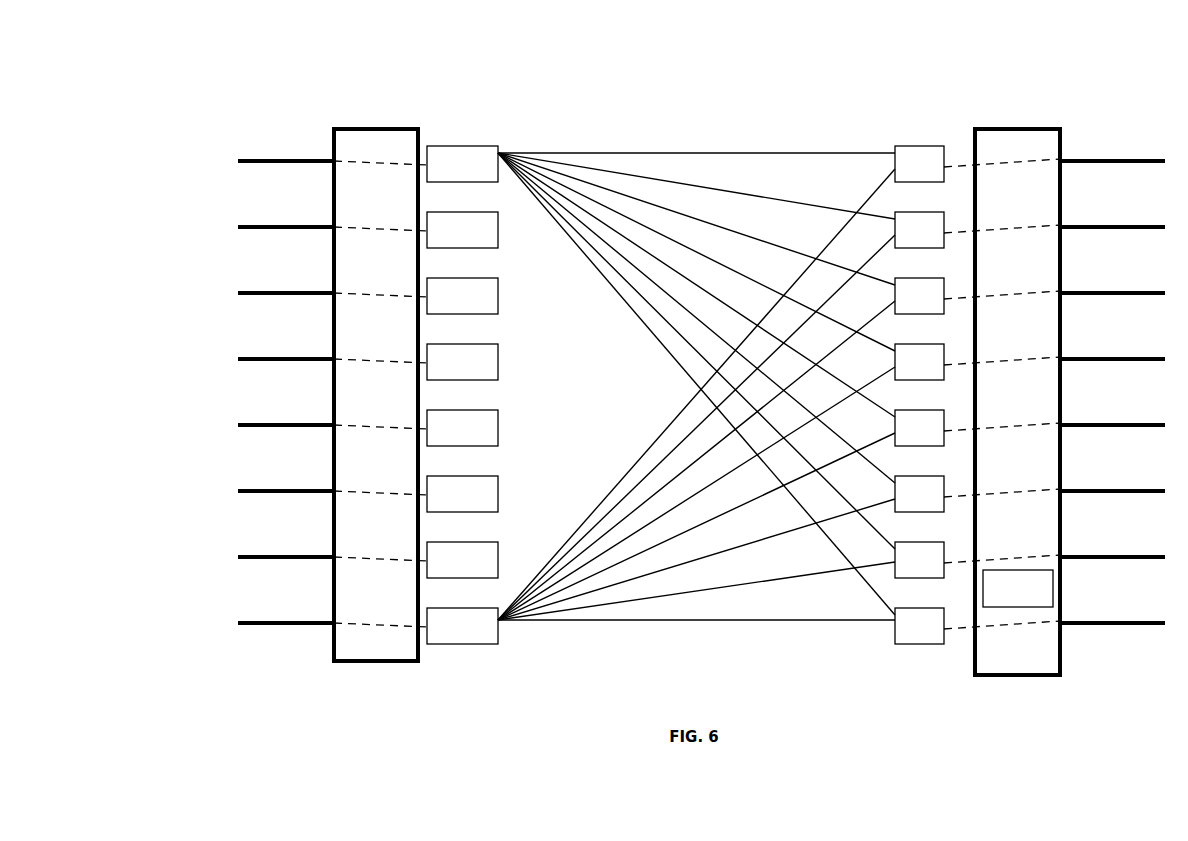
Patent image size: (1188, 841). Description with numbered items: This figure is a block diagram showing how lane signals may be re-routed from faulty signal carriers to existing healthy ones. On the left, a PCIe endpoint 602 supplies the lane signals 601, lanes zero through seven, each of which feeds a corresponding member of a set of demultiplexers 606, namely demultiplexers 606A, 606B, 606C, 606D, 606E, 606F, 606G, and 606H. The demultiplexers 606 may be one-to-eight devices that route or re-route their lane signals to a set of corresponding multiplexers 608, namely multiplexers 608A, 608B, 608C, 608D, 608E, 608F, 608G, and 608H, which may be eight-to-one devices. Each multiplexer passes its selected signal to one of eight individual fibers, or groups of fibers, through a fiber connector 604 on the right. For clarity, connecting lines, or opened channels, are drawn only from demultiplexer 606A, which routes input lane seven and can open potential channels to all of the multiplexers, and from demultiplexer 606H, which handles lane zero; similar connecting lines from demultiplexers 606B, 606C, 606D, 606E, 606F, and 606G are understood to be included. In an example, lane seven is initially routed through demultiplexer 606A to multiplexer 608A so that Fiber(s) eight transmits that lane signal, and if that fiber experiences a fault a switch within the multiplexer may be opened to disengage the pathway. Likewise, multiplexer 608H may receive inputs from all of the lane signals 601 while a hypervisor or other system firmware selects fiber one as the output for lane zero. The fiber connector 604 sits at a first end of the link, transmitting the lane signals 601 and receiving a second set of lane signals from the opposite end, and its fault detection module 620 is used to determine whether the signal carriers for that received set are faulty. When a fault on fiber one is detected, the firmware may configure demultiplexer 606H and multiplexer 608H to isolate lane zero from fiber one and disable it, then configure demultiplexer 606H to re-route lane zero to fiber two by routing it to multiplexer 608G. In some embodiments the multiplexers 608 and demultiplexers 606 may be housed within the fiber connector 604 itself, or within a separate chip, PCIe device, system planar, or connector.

The lane signals 601 is at (248, 104).
The PCIe endpoint 602 is at (382, 129).
The fiber connector 604 is at (1008, 129).
The set of demultiplexers 606 is at (471, 433).
The demultiplexer 606A is at (465, 146).
The demultiplexer 606B is at (437, 212).
The demultiplexer 606C is at (437, 278).
The demultiplexer 606D is at (437, 344).
The demultiplexer 606E is at (437, 410).
The demultiplexer 606F is at (437, 476).
The demultiplexer 606G is at (437, 542).
The demultiplexer 606H is at (505, 657).
The set of multiplexers 608 is at (921, 423).
The multiplexer 608A is at (910, 146).
The multiplexer 608B is at (906, 212).
The multiplexer 608C is at (906, 278).
The multiplexer 608D is at (906, 344).
The multiplexer 608E is at (906, 410).
The multiplexer 608F is at (906, 476).
The multiplexer 608G is at (906, 542).
The multiplexer 608H is at (957, 645).
The fault detection module 620 is at (1035, 605).